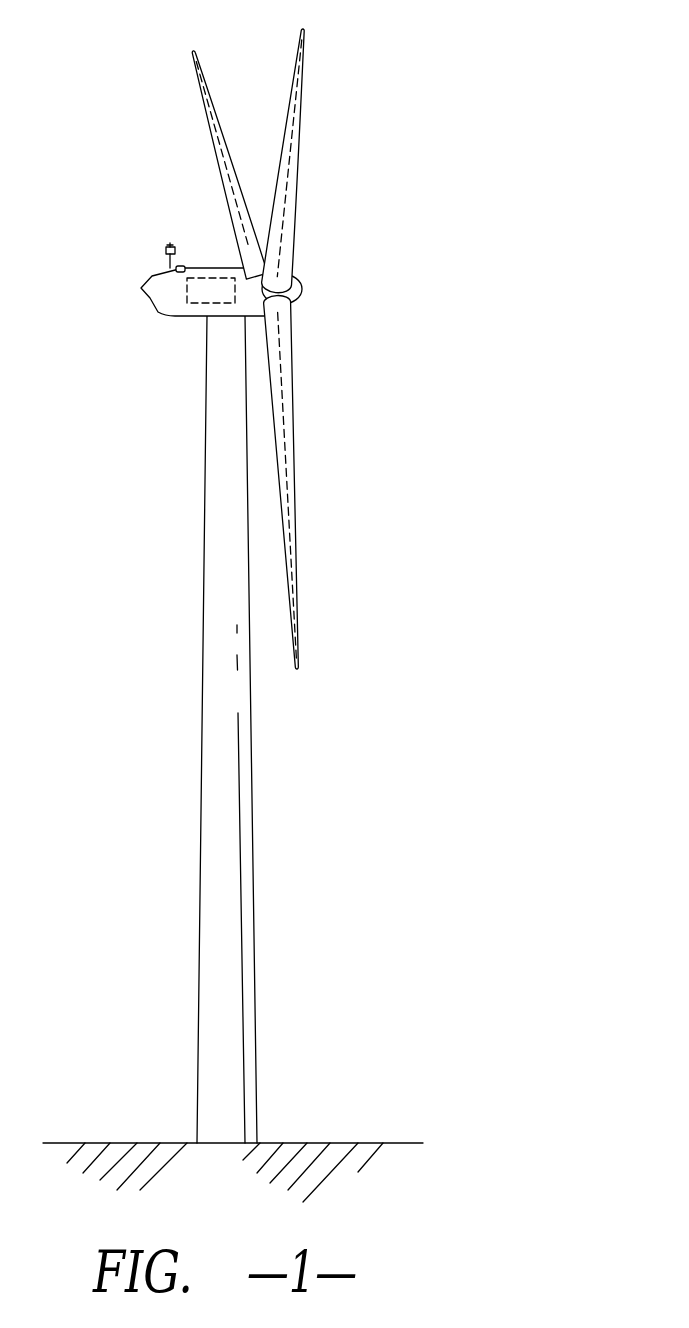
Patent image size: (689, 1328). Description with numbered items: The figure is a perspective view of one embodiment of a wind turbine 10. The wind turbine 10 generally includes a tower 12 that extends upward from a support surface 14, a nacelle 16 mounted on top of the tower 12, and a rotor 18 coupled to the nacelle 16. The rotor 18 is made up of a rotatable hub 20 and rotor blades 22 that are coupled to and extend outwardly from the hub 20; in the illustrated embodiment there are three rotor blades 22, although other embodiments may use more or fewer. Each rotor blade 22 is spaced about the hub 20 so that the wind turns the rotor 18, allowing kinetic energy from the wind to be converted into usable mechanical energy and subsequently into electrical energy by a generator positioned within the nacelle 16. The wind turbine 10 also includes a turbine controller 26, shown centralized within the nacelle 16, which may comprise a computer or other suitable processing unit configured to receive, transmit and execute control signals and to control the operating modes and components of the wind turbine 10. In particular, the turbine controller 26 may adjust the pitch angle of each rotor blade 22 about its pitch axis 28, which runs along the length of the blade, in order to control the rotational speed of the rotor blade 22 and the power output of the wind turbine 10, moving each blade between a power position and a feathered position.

The wind turbine 10 is at (260, 604).
The tower 12 is at (212, 843).
The support surface 14 is at (125, 1143).
The nacelle 16 is at (185, 282).
The rotor 18 is at (275, 338).
The rotatable hub 20 is at (300, 297).
The rotor blade 22 is at (297, 70).
The turbine controller 26 is at (212, 277).
The pitch axis 28 is at (226, 172).